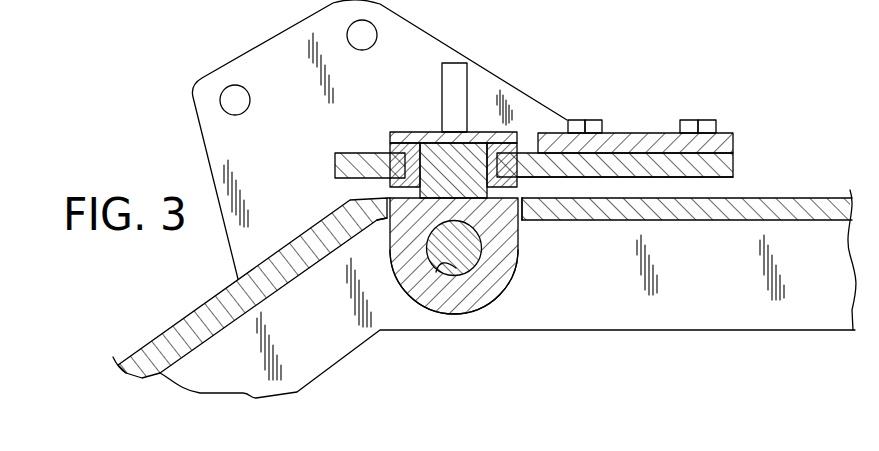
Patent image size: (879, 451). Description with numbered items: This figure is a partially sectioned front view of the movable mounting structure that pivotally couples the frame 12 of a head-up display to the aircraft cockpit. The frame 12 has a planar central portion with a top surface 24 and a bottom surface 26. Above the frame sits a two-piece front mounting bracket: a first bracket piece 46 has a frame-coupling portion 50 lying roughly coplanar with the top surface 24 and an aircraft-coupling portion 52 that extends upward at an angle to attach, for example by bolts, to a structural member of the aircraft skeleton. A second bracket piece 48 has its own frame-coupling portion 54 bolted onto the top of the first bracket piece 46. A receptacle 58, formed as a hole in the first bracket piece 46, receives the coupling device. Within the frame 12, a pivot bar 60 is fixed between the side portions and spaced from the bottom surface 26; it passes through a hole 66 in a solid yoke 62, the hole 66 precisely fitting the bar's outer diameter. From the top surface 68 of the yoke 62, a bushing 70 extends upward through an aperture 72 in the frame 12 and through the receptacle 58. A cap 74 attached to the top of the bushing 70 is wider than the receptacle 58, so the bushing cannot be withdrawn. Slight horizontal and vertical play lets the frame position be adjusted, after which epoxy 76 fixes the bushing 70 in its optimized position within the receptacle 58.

The frame 12 is at (147, 370).
The top surface 24 is at (823, 197).
The bottom surface 26 is at (802, 221).
The first bracket piece 46 is at (728, 160).
The second bracket piece 48 is at (735, 141).
The frame-coupling portion 50 is at (683, 172).
The aircraft-coupling portion 52 is at (219, 143).
The frame-coupling portion 54 is at (628, 133).
The receptacle 58 is at (405, 162).
The pivot bar 60 is at (470, 200).
The yoke 62 is at (405, 292).
The hole 66 is at (452, 272).
The top surface 68 is at (518, 250).
The bushing 70 is at (470, 158).
The aperture 72 is at (390, 197).
The cap 74 is at (434, 147).
The epoxy 76 is at (414, 157).